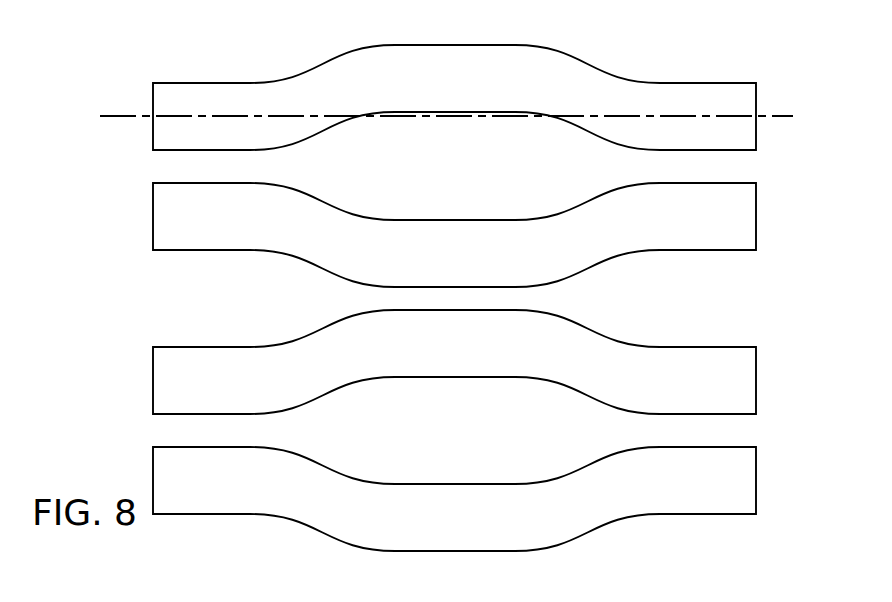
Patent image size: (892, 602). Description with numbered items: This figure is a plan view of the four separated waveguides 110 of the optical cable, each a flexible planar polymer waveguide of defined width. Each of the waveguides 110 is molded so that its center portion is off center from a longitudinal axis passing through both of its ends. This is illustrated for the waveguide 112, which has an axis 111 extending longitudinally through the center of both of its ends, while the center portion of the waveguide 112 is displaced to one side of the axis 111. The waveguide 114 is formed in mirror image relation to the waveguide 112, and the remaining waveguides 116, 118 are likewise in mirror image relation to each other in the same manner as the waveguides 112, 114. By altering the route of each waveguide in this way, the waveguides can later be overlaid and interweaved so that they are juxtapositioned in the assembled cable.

The waveguides 110 is at (176, 39).
The axis 111 is at (770, 116).
The waveguide 112 is at (664, 83).
The waveguide 114 is at (662, 250).
The waveguide 116 is at (663, 347).
The waveguide 118 is at (663, 514).